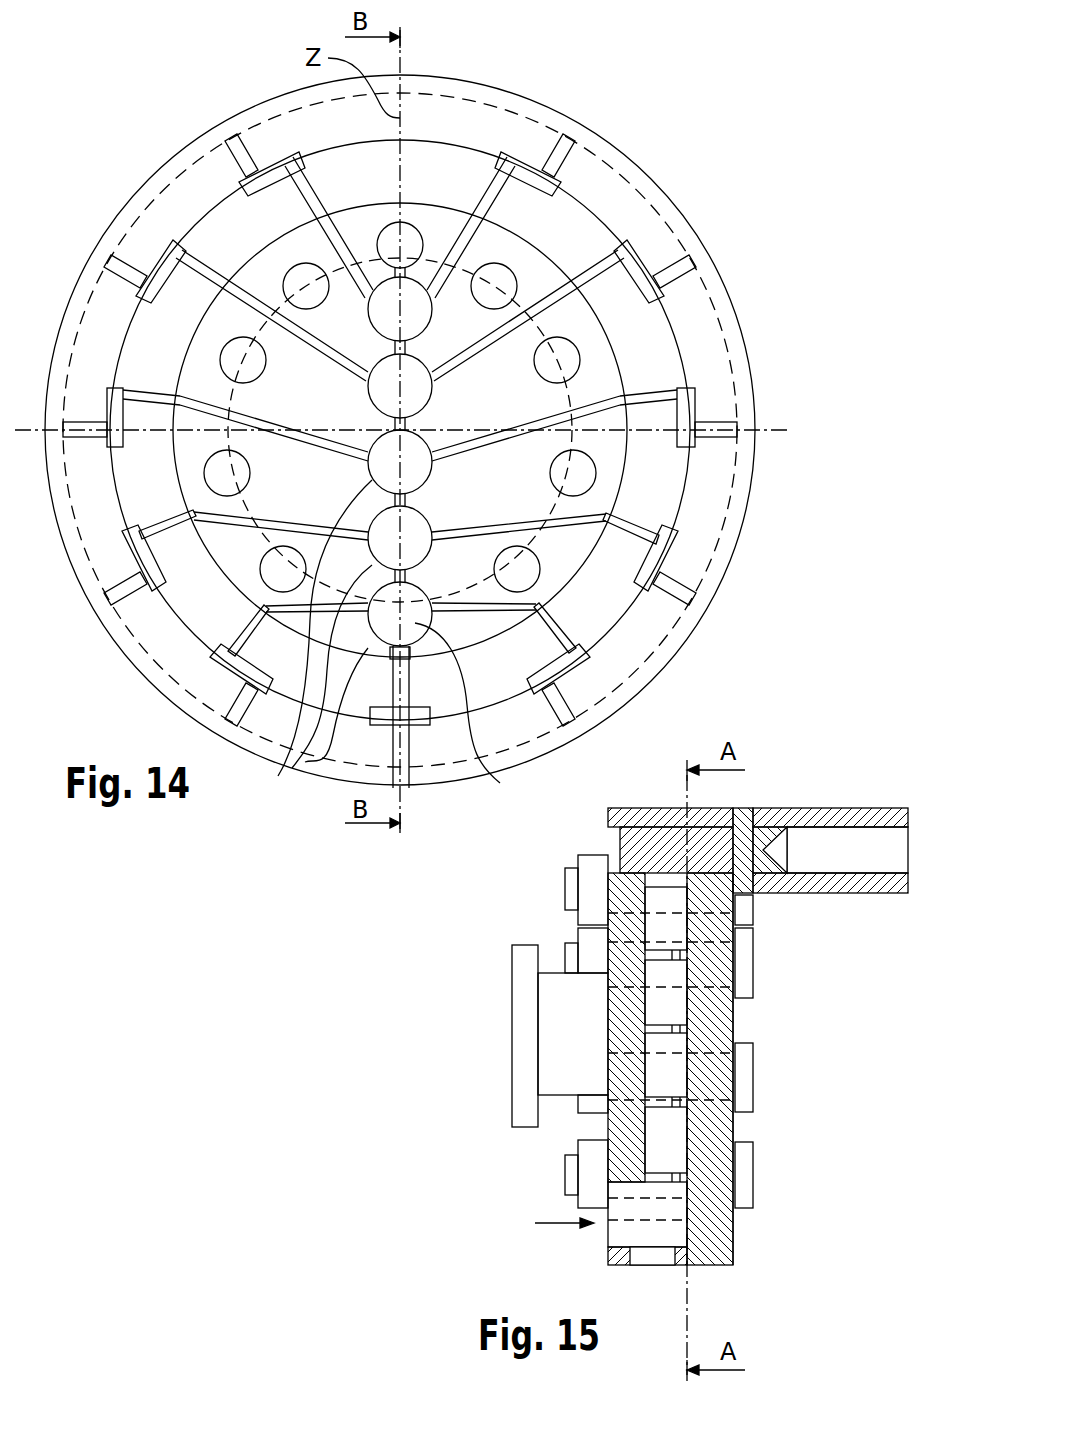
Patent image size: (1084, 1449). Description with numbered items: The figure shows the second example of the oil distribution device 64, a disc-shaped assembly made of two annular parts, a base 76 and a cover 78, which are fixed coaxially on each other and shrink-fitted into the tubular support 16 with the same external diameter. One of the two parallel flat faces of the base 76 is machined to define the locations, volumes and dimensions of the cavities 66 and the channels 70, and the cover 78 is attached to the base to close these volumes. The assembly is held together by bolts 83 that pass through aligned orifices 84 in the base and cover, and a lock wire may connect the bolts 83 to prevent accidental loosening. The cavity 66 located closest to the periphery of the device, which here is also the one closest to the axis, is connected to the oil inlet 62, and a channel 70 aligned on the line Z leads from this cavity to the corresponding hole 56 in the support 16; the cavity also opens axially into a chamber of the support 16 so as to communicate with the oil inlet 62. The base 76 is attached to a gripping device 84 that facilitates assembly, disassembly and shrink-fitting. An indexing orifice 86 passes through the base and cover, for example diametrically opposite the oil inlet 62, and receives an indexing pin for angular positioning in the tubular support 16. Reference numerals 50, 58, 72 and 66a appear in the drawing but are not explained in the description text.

In FIG. 14, the housing ring 50 is at (632, 157).
In FIG. 14, the pitch circle 58 is at (748, 447).
In FIG. 14, the tubular support 16 is at (647, 327).
In FIG. 14, the device 64 is at (567, 570).
In FIG. 15, the device 64 is at (793, 1293).
In FIG. 14, the orifices 84 is at (590, 478).
In FIG. 15, the orifices 84 is at (525, 962).
In FIG. 14, the radial bar 72 is at (715, 405).
In FIG. 14, the hole 56 is at (700, 470).
In FIG. 14, the channels 70 is at (600, 393).
In FIG. 14, the orifice 86 is at (415, 223).
In FIG. 15, the orifice 86 is at (670, 835).
In FIG. 14, the cavities 66 is at (298, 765).
In FIG. 15, the cavities 66 is at (665, 1005).
In FIG. 14, the end sealing strip 66a is at (500, 783).
In FIG. 15, the end sealing strip 66a is at (665, 1232).
In FIG. 15, the bolts 83 is at (742, 1070).
In FIG. 15, the cover 78 is at (748, 1251).
In FIG. 15, the base 76 is at (632, 1260).
In FIG. 15, the oil inlet 62 is at (545, 1224).